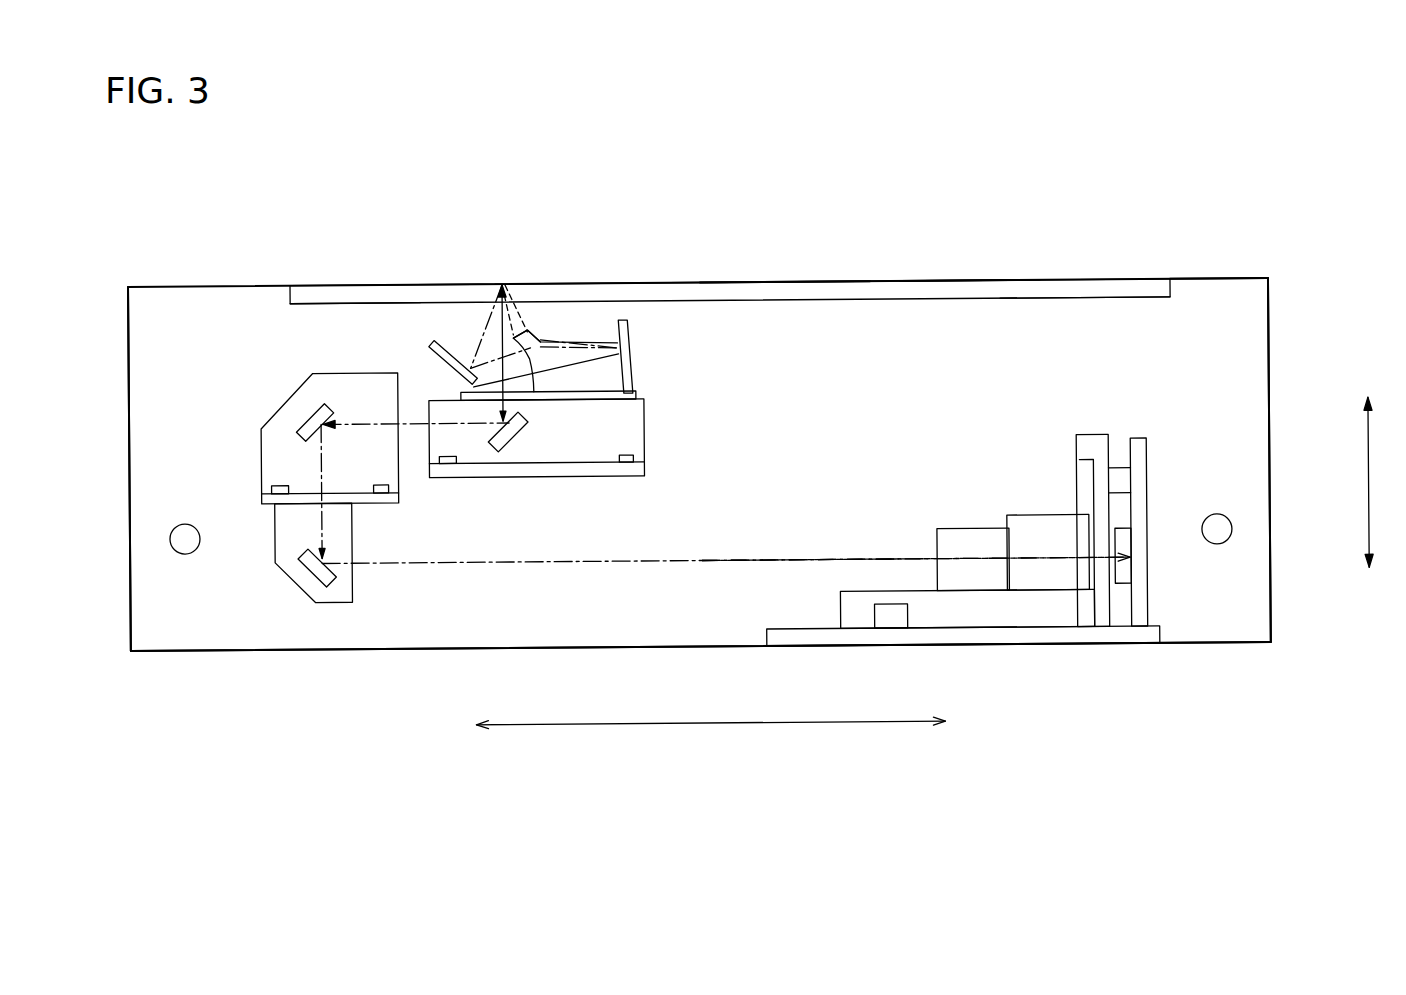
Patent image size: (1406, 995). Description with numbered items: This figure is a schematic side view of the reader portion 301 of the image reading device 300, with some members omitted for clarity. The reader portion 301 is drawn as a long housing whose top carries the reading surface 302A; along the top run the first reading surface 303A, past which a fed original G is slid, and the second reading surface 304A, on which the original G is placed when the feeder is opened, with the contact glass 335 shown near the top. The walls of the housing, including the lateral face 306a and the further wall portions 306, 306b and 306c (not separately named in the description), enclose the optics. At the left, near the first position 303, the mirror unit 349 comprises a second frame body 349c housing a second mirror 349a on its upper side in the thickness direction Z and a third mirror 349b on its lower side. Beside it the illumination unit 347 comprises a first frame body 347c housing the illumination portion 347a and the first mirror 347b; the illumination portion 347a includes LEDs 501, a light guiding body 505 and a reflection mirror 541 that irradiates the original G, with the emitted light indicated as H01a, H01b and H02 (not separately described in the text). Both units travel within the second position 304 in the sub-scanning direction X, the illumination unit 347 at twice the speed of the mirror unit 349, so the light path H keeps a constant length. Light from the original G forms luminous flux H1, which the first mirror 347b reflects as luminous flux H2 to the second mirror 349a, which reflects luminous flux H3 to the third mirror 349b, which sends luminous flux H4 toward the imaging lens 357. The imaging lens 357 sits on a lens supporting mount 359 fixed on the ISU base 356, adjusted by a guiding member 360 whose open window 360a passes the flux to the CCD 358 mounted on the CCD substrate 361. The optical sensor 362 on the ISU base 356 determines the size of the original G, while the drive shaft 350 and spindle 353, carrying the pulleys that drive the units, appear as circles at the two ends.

The image reading device 300 is at (1274, 216).
The reader portion 301 is at (1268, 337).
The reading surface 302A is at (786, 287).
The first position 303 is at (305, 316).
The first reading surface 303A is at (348, 287).
The second position 304 is at (1023, 327).
The second reading surface 304A is at (945, 287).
The top wall 306 is at (1203, 287).
The lateral face 306a is at (1268, 456).
The left side wall 306b is at (128, 455).
The bottom wall 306c is at (644, 651).
The contact glass 335 is at (1105, 299).
The illumination unit 347 is at (566, 379).
The illumination portion 347a is at (645, 357).
The first mirror 347b is at (508, 456).
The first frame body 347c is at (644, 436).
The mirror unit 349 is at (282, 426).
The second mirror 349a is at (325, 410).
The third mirror 349b is at (302, 574).
The second frame body 349c is at (260, 464).
The drive shaft 350 is at (1212, 540).
The spindle 353 is at (178, 540).
The ISU base 356 is at (789, 645).
The imaging lens 357 is at (938, 535).
The CCD 358 is at (1124, 585).
The lens supporting mount 359 is at (856, 626).
The guiding member 360 is at (1062, 507).
The open window 360a is at (1079, 477).
The CCD substrate 361 is at (1138, 446).
The optical sensor 362 is at (895, 626).
The LEDs 501 is at (629, 346).
The light guiding body 505 is at (608, 346).
The reflection mirror 541 is at (435, 349).
The original G is at (500, 287).
The light path H is at (785, 546).
The light beam portion H01a is at (510, 315).
The light beam portion H01b is at (527, 335).
The light beam portion H02 is at (495, 288).
The luminous flux H1 is at (486, 333).
The luminous flux H2 is at (417, 426).
The luminous flux H3 is at (322, 526).
The luminous flux H4 is at (829, 563).
The sub-scanning direction X is at (710, 737).
The thickness direction Z is at (1378, 482).